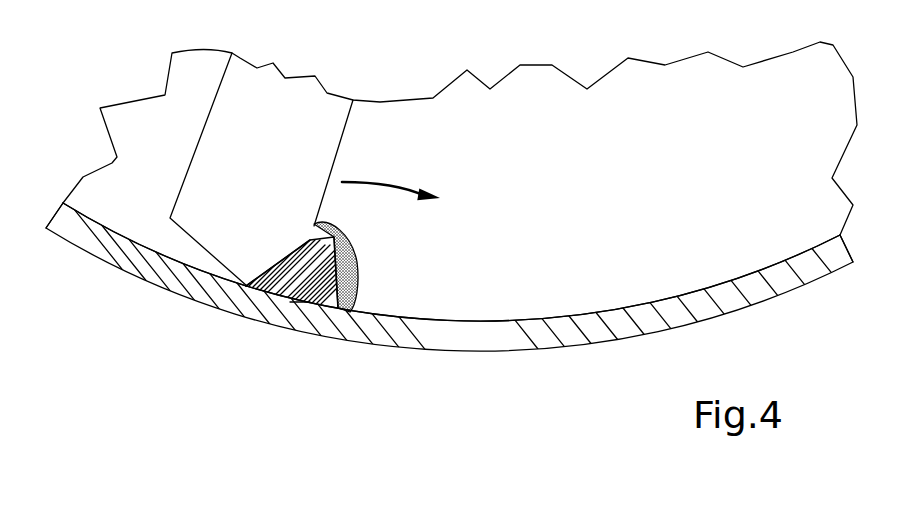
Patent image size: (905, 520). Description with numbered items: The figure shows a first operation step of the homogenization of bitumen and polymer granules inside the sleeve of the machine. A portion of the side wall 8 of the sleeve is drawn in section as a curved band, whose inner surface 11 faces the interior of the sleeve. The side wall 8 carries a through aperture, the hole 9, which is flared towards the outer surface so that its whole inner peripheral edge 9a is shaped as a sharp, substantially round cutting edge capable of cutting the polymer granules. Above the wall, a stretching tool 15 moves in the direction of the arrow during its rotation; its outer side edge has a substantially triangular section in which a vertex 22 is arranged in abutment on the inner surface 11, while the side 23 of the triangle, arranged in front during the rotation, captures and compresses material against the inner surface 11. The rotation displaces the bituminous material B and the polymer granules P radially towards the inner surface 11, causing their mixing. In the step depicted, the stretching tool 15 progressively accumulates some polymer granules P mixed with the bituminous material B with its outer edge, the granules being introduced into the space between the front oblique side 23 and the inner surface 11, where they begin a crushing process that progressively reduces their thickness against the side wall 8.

The side wall 8 is at (790, 280).
The through aperture 9 is at (418, 328).
The inner peripheral edge 9a is at (497, 318).
The inner surface 11 is at (100, 220).
The stretching tool 15 is at (205, 100).
The vertex 22 is at (225, 280).
The front oblique side 23 is at (280, 258).
The polymer granules P is at (300, 290).
The bituminous material B is at (356, 262).